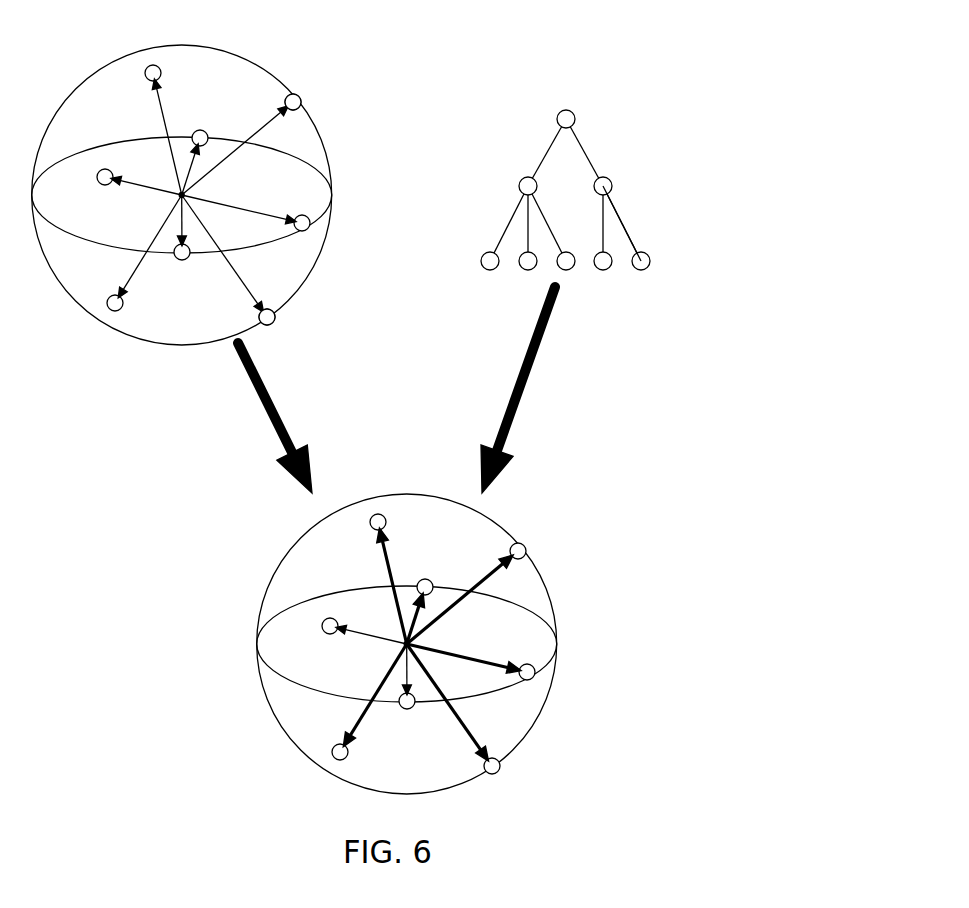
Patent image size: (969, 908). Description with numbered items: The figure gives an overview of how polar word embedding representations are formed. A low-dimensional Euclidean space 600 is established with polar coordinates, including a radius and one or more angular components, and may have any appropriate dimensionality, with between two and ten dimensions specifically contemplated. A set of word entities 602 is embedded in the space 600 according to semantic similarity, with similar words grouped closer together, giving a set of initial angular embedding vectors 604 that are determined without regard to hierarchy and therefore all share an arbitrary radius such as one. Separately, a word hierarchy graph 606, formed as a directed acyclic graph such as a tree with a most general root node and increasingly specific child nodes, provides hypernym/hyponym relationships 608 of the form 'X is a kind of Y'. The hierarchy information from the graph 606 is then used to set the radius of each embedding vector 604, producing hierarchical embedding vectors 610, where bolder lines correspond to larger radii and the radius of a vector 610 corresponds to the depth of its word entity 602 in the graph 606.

The low-dimensional Euclidean space 600 is at (332, 197).
The word entity 602 is at (301, 105).
The initial angular embedding vector 604 is at (270, 309).
The word hierarchy graph 606 is at (575, 122).
The hypernym/hyponym relationship 608 is at (617, 215).
The hierarchical embedding vector 610 is at (495, 578).